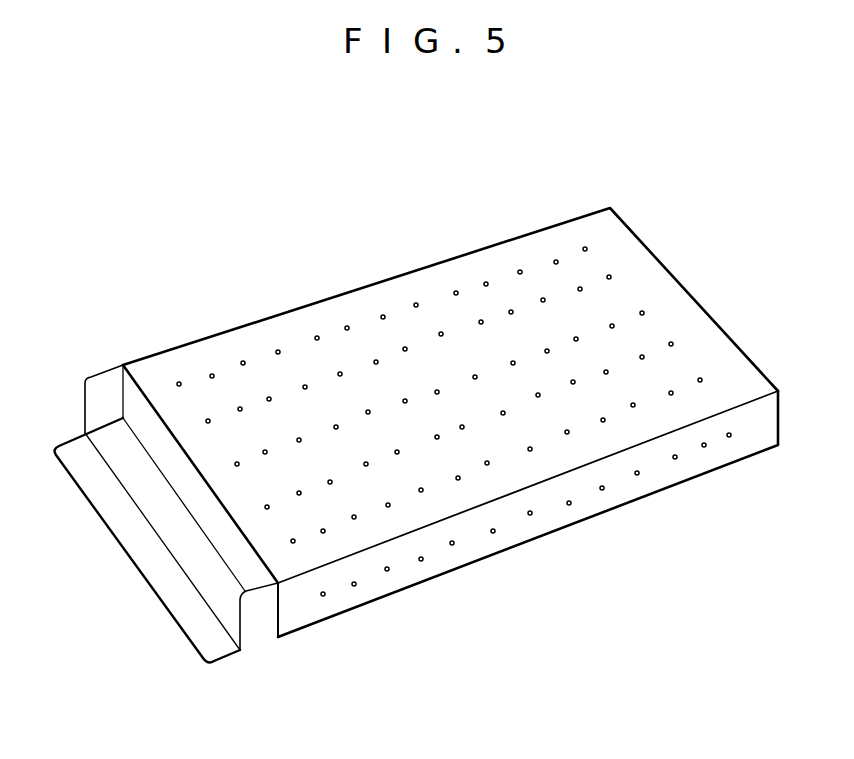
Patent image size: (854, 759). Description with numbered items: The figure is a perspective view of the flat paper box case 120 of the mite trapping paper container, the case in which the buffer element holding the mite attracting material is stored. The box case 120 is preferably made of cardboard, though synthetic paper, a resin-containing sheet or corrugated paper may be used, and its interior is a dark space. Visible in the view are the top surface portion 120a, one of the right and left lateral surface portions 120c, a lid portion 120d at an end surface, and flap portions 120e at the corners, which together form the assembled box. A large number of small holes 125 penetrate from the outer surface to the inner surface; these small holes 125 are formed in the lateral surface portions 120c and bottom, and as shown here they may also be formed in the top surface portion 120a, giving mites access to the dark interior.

The box case 120 is at (415, 449).
The top surface portion 120a is at (255, 338).
The lateral surface portion 120c is at (407, 574).
The lid portion 120d is at (130, 537).
The flap portion 120e is at (95, 387).
The small holes 125 is at (486, 283).